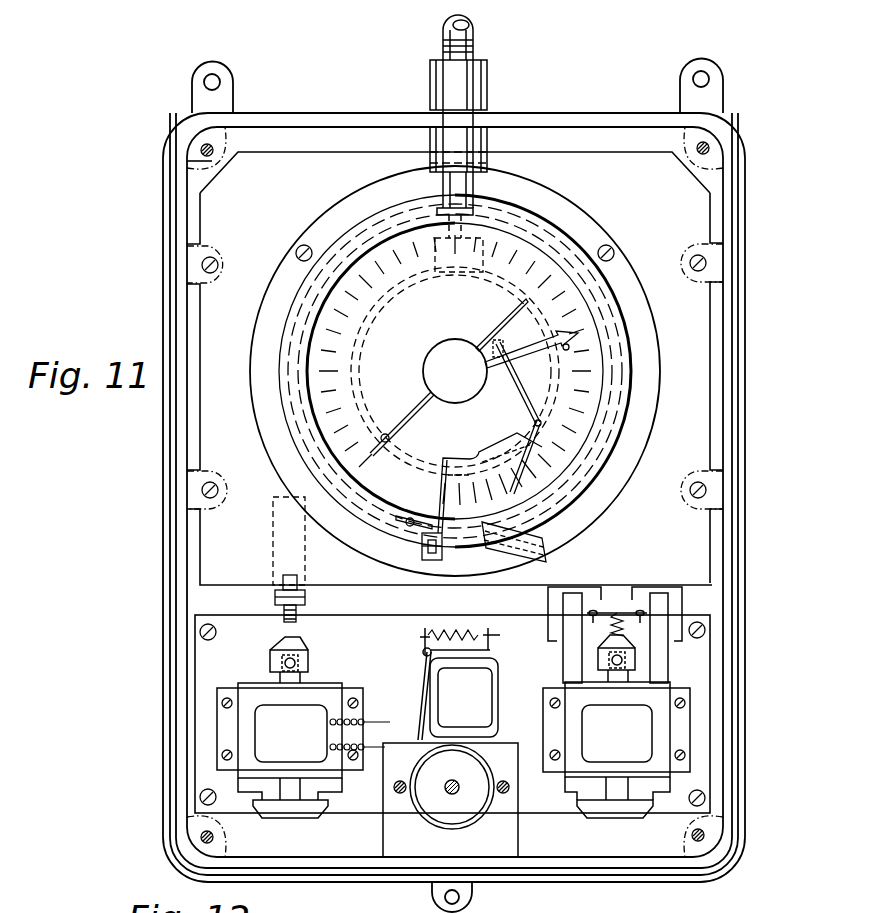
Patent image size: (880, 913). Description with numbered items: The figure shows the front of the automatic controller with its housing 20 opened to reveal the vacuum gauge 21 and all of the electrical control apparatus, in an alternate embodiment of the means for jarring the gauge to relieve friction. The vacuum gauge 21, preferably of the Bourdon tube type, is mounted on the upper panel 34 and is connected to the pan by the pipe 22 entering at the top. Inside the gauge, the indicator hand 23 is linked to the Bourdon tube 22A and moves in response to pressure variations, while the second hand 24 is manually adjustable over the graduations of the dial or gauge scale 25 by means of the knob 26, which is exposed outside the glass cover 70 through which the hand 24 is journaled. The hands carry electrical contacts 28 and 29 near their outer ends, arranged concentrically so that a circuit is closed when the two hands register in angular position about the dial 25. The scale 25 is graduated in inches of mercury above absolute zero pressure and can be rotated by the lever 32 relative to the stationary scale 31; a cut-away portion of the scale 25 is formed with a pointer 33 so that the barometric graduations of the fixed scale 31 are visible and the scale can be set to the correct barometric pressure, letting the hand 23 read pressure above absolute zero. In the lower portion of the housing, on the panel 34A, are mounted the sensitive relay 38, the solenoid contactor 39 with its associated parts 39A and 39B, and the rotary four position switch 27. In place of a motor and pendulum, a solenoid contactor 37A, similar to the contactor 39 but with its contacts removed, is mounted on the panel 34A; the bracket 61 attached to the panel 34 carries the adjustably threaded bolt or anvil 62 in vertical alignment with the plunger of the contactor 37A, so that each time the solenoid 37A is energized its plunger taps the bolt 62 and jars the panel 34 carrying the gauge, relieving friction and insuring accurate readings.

The housing 20 is at (735, 321).
The vacuum gauge 21 is at (303, 232).
The pipe 22 is at (473, 30).
The Bourdon tube 22A is at (360, 349).
The indicator hand 23 is at (405, 420).
The adjustable hand 24 is at (553, 340).
The gauge scale 25 is at (345, 432).
The knob 26 is at (436, 350).
The rotary four position switch 27 is at (480, 768).
The electrical contact 28 is at (580, 340).
The electrical contact 29 is at (385, 433).
The stationary scale 31 is at (512, 493).
The lever 32 is at (428, 560).
The pointer 33 is at (478, 456).
The panel 34 is at (707, 190).
The panel 34A is at (712, 637).
The solenoid contactor 37A is at (322, 703).
The sensitive relay 38 is at (482, 681).
The solenoid contactor 39 is at (570, 705).
The armature block 39A is at (632, 626).
The bracket 39B is at (640, 597).
The bracket 61 is at (305, 598).
The bolt 62 is at (296, 622).
The glass cover 70 is at (590, 384).